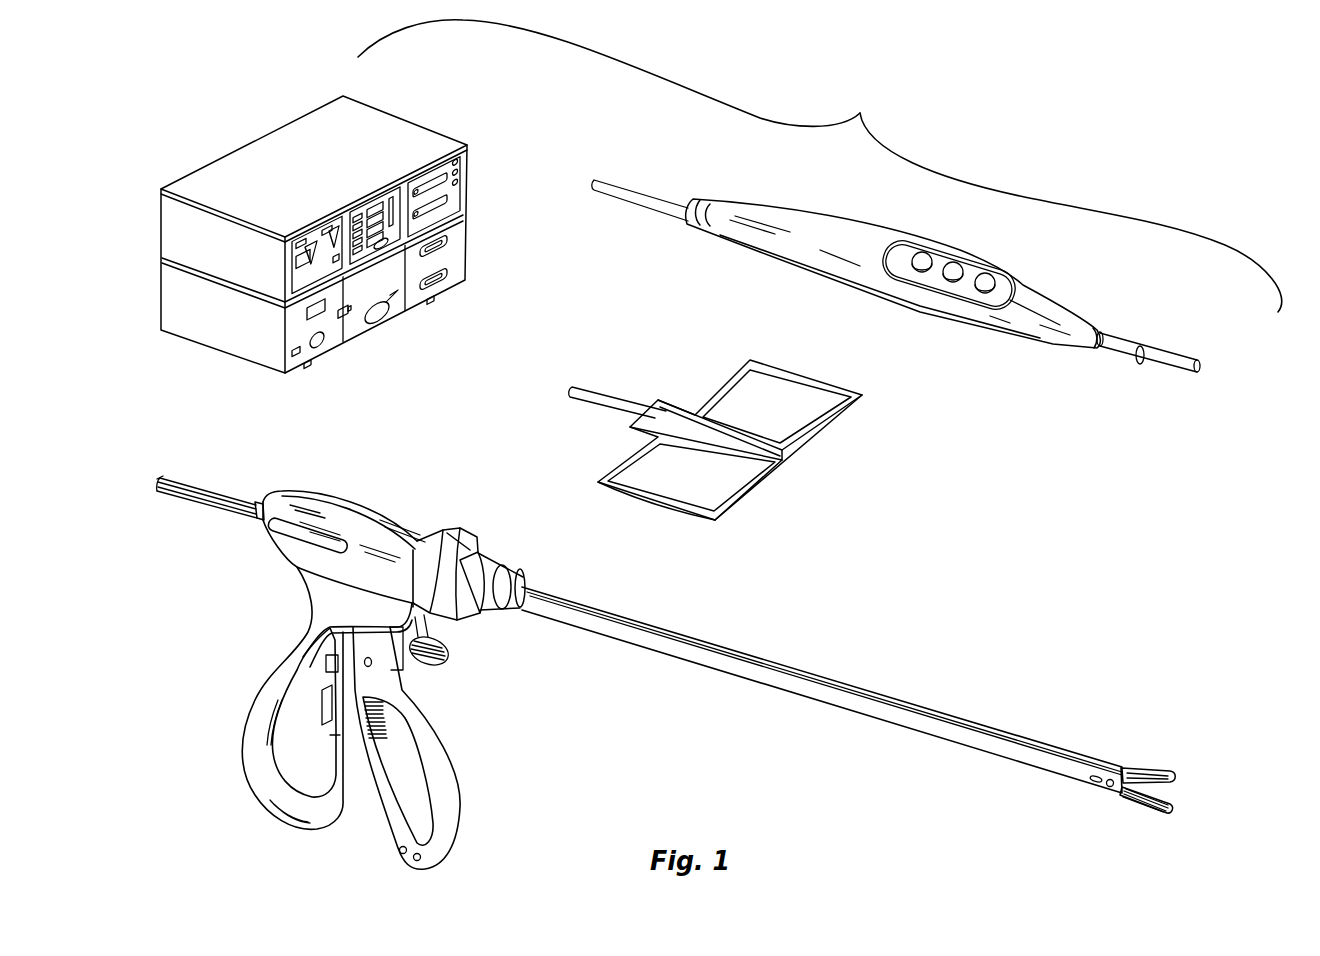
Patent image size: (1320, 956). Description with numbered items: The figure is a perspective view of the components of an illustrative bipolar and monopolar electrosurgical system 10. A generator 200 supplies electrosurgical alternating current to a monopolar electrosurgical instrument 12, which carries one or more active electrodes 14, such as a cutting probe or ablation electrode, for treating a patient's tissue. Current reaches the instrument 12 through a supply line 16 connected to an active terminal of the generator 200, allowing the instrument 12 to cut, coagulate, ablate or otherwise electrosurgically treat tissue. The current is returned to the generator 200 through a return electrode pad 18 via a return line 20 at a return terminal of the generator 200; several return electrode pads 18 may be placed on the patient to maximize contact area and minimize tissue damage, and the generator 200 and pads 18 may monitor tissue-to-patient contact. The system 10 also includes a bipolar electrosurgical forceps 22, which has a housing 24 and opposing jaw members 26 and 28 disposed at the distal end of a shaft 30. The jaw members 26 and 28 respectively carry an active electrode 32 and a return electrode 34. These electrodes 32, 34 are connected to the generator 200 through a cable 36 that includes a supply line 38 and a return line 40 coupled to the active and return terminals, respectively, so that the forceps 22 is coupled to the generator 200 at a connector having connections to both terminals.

The electrosurgical system 10 is at (965, 86).
The generator 200 is at (246, 113).
The monopolar electrosurgical instrument 12 is at (1058, 298).
The active electrode 14 is at (1167, 350).
The supply line 16 is at (637, 190).
The return electrode pad 18 is at (659, 505).
The return line 20 is at (603, 388).
The bipolar electrosurgical forceps 22 is at (1142, 686).
The housing 24 is at (372, 497).
The jaw member 26 is at (1165, 770).
The jaw member 28 is at (1152, 814).
The shaft 30 is at (824, 670).
The active electrode 32 is at (1172, 783).
The return electrode 34 is at (1172, 800).
The cable 36 is at (233, 495).
The supply line 38 is at (177, 484).
The return line 40 is at (197, 500).